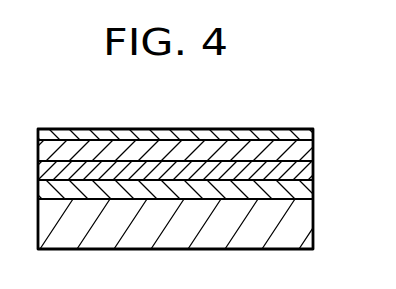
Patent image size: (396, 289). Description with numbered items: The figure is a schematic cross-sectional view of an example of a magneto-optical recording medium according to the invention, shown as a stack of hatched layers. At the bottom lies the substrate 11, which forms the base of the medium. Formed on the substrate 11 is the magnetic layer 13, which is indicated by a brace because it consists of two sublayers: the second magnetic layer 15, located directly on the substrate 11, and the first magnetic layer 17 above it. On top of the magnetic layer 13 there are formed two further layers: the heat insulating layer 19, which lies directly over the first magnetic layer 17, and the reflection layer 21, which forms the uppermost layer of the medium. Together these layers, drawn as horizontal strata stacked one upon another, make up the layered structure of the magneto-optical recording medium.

The substrate 11 is at (314, 232).
The magnetic layer 13 is at (213, 168).
The second magnetic layer 15 is at (197, 192).
The first magnetic layer 17 is at (314, 170).
The heat insulating layer 19 is at (314, 145).
The reflection layer 21 is at (314, 131).